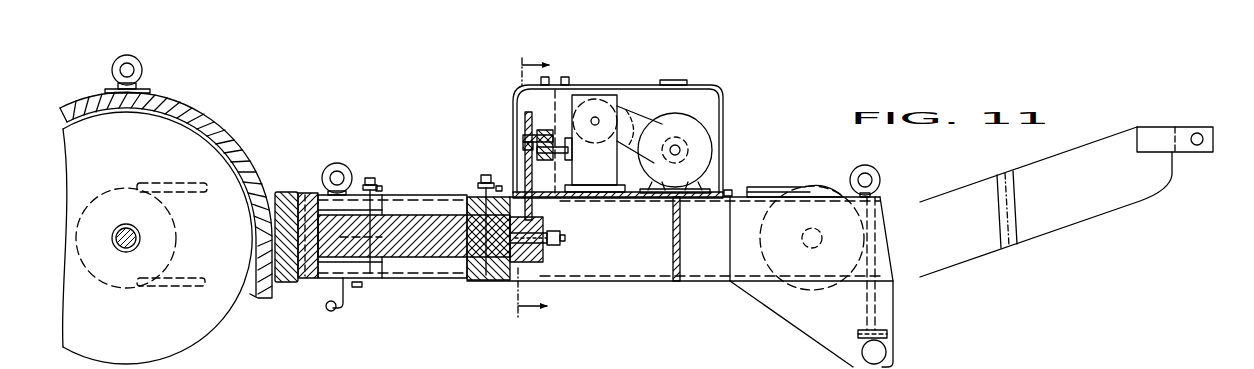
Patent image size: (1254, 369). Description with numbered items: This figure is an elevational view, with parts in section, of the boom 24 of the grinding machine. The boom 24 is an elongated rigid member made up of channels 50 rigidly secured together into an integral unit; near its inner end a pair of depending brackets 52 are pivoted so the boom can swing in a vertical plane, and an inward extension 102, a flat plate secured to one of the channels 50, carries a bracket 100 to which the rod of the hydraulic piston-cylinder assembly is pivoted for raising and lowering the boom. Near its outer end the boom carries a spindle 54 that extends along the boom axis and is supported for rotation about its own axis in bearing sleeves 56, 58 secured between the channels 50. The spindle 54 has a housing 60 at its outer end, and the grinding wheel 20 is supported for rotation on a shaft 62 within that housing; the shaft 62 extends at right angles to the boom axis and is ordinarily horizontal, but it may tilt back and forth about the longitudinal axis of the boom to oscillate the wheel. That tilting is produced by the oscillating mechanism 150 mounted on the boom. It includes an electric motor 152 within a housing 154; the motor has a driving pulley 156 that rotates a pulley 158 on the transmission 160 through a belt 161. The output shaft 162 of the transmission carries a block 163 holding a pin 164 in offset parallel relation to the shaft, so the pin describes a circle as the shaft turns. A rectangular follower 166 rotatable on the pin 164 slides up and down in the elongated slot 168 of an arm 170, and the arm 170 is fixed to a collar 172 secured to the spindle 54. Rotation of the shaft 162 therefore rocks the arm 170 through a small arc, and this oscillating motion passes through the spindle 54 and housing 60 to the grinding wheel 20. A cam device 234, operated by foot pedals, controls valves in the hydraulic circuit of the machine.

The grinding wheel 20 is at (206, 320).
The shaft 62 is at (121, 230).
The housing 60 is at (249, 162).
The bearing sleeve 56 is at (325, 205).
The spindle 54 is at (412, 250).
The bearing sleeve 58 is at (478, 192).
The boom 24 is at (606, 284).
The arm 170 is at (548, 212).
The collar 172 is at (540, 263).
The oscillating mechanism 150 is at (609, 136).
The housing 154 is at (640, 84).
The pin 164 is at (578, 207).
The rectangular follower 166 is at (525, 131).
The elongated slot 168 is at (527, 163).
The output shaft 162 is at (562, 150).
The transmission 160 is at (620, 103).
The pulley 158 is at (583, 96).
The belt 161 is at (620, 170).
The block 163 is at (592, 212).
The electric motor 152 is at (703, 138).
The driving pulley 156 is at (712, 152).
The channels 50 is at (703, 263).
The depending brackets 52 is at (818, 327).
The cam device 234 is at (783, 267).
The inward extension 102 is at (1062, 215).
The bracket 100 is at (1155, 133).